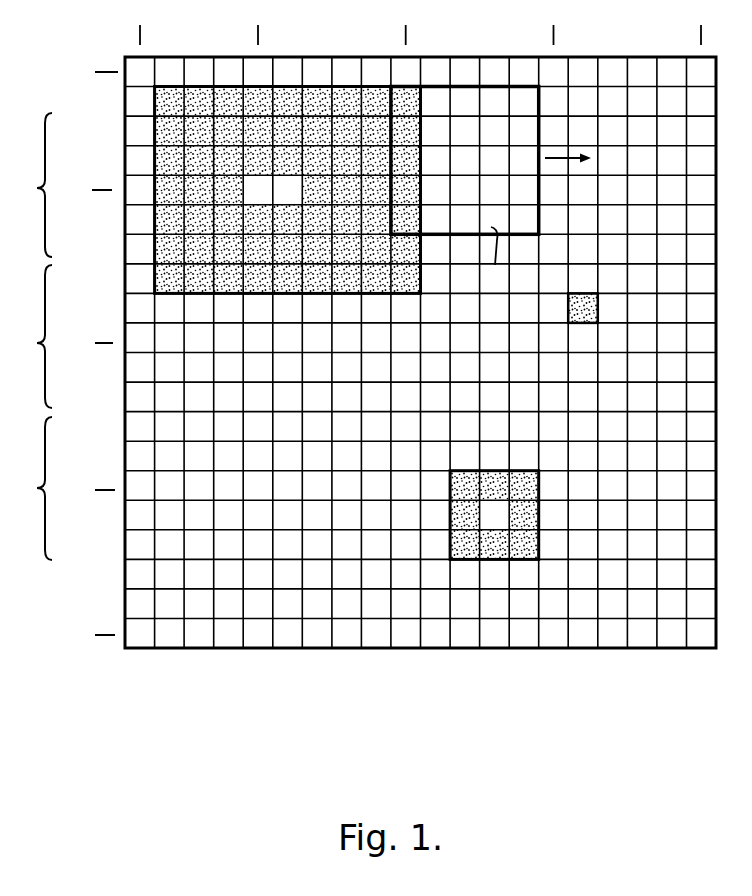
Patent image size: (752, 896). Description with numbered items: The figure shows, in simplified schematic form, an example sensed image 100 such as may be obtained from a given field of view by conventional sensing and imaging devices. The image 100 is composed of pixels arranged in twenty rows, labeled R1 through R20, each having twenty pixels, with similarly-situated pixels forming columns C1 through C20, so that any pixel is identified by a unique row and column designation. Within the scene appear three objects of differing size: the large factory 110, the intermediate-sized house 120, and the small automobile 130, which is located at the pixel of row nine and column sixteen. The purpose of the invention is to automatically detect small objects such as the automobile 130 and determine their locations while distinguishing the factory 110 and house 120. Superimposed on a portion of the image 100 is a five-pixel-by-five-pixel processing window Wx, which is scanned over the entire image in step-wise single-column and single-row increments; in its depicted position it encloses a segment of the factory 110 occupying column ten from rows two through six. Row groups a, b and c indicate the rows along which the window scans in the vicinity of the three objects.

The sensed image 100 is at (301, 667).
The factory 110 is at (283, 198).
The house 120 is at (507, 528).
The automobile 130 is at (593, 323).